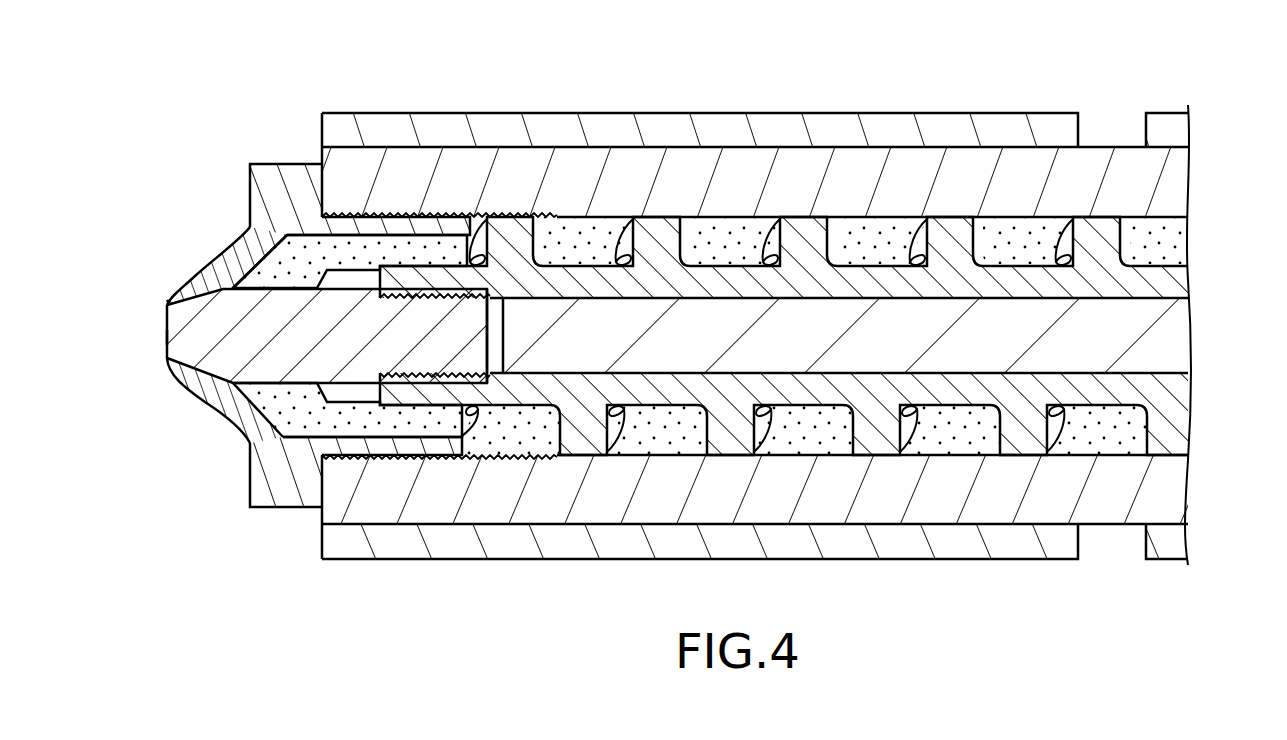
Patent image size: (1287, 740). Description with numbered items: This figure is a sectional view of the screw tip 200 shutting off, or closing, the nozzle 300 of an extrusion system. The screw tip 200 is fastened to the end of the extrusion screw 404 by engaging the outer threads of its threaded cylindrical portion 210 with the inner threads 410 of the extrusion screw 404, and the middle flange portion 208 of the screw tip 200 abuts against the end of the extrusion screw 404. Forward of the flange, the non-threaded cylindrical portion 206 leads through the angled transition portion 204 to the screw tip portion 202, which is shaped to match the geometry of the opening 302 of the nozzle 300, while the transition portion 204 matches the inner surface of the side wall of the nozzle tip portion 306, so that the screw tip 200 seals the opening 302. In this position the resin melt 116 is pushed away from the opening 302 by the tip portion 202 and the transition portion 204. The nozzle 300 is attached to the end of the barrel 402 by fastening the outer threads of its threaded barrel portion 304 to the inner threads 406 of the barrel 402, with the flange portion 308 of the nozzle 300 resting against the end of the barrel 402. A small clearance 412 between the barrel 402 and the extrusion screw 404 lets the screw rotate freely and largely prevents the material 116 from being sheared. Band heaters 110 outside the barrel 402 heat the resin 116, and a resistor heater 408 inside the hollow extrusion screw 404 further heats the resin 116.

The band heaters 110 is at (741, 112).
The resin melt 116 is at (337, 240).
The screw tip 200 is at (150, 358).
The screw tip portion 202 is at (170, 300).
The angled transition portion 204 is at (217, 365).
The non-threaded cylindrical portion 206 is at (283, 363).
The middle flange portion 208 is at (350, 388).
The threaded cylindrical portion 210 is at (428, 338).
The nozzle 300 is at (212, 225).
The opening 302 is at (167, 343).
The threaded barrel portion 304 is at (447, 440).
The nozzle tip portion 306 is at (215, 272).
The flange portion 308 is at (297, 178).
The barrel 402 is at (553, 178).
The extrusion screw 404 is at (1173, 283).
The inner threads 406 is at (377, 213).
The resistor heater 408 is at (1147, 338).
The inner threads 410 is at (446, 372).
The clearance 412 is at (883, 450).